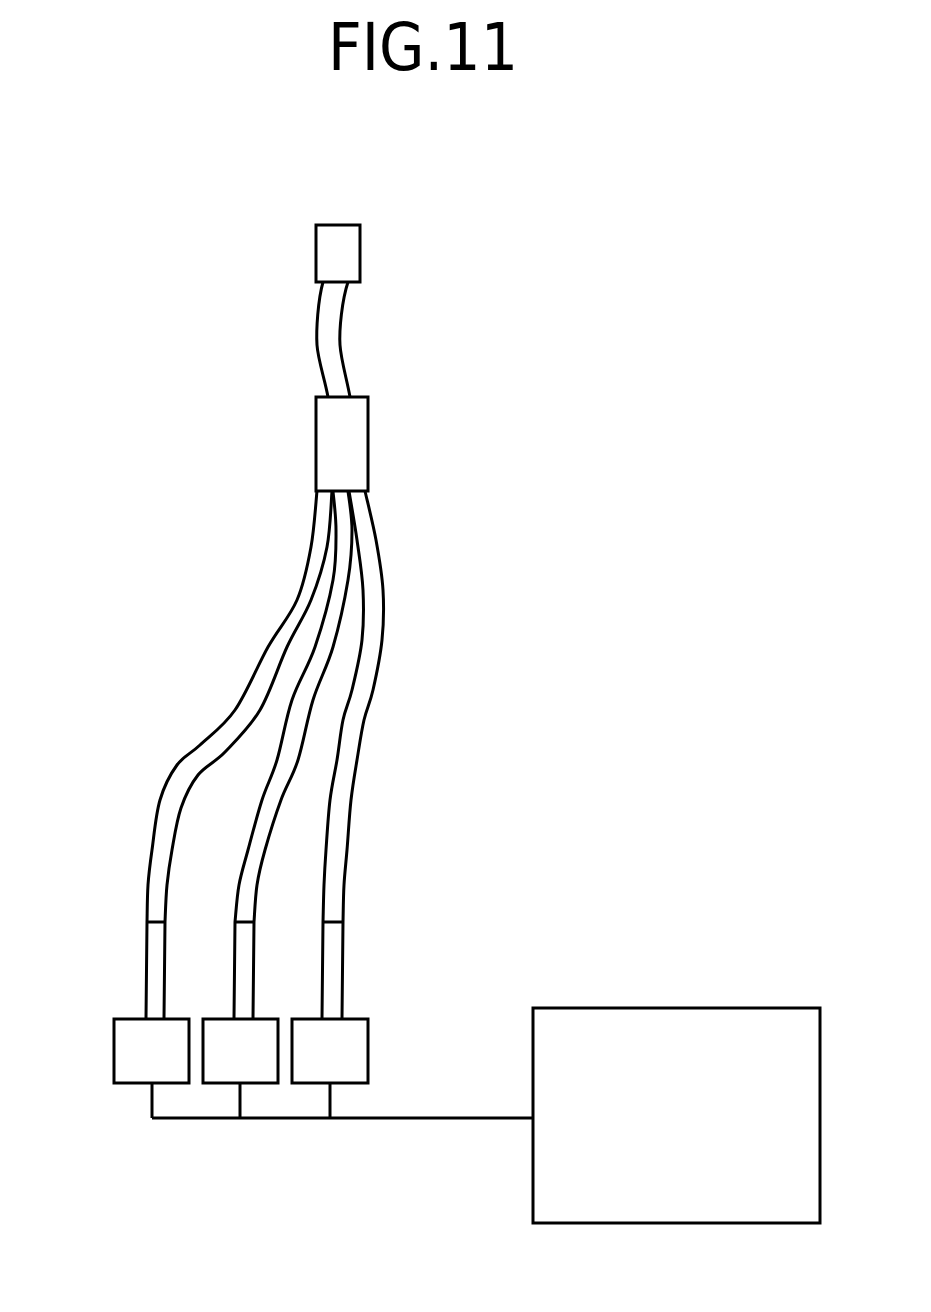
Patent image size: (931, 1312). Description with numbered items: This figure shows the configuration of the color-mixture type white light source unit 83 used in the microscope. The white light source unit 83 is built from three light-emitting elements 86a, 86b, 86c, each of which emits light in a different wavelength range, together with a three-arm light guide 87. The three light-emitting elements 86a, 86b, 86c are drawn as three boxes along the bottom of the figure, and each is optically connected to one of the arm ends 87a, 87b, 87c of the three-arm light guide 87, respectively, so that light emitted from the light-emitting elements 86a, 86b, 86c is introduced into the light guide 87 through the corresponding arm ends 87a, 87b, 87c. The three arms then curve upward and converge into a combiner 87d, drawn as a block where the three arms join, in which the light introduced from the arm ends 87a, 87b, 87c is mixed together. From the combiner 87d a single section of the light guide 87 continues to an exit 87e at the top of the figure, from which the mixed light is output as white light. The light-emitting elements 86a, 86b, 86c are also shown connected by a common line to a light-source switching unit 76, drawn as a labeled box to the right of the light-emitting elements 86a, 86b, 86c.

The color-mixture type white light source unit 83 is at (448, 214).
The three-arm light guide 87 is at (340, 342).
The exit 87e is at (338, 225).
The combiner 87d is at (315, 443).
The arm end 87a is at (151, 1018).
The arm end 87b is at (242, 1018).
The arm end 87c is at (331, 1018).
The light-emitting element 86a is at (128, 1085).
The light-emitting element 86b is at (218, 1085).
The light-emitting element 86c is at (313, 1085).
The light-source switching unit 76 is at (679, 1008).